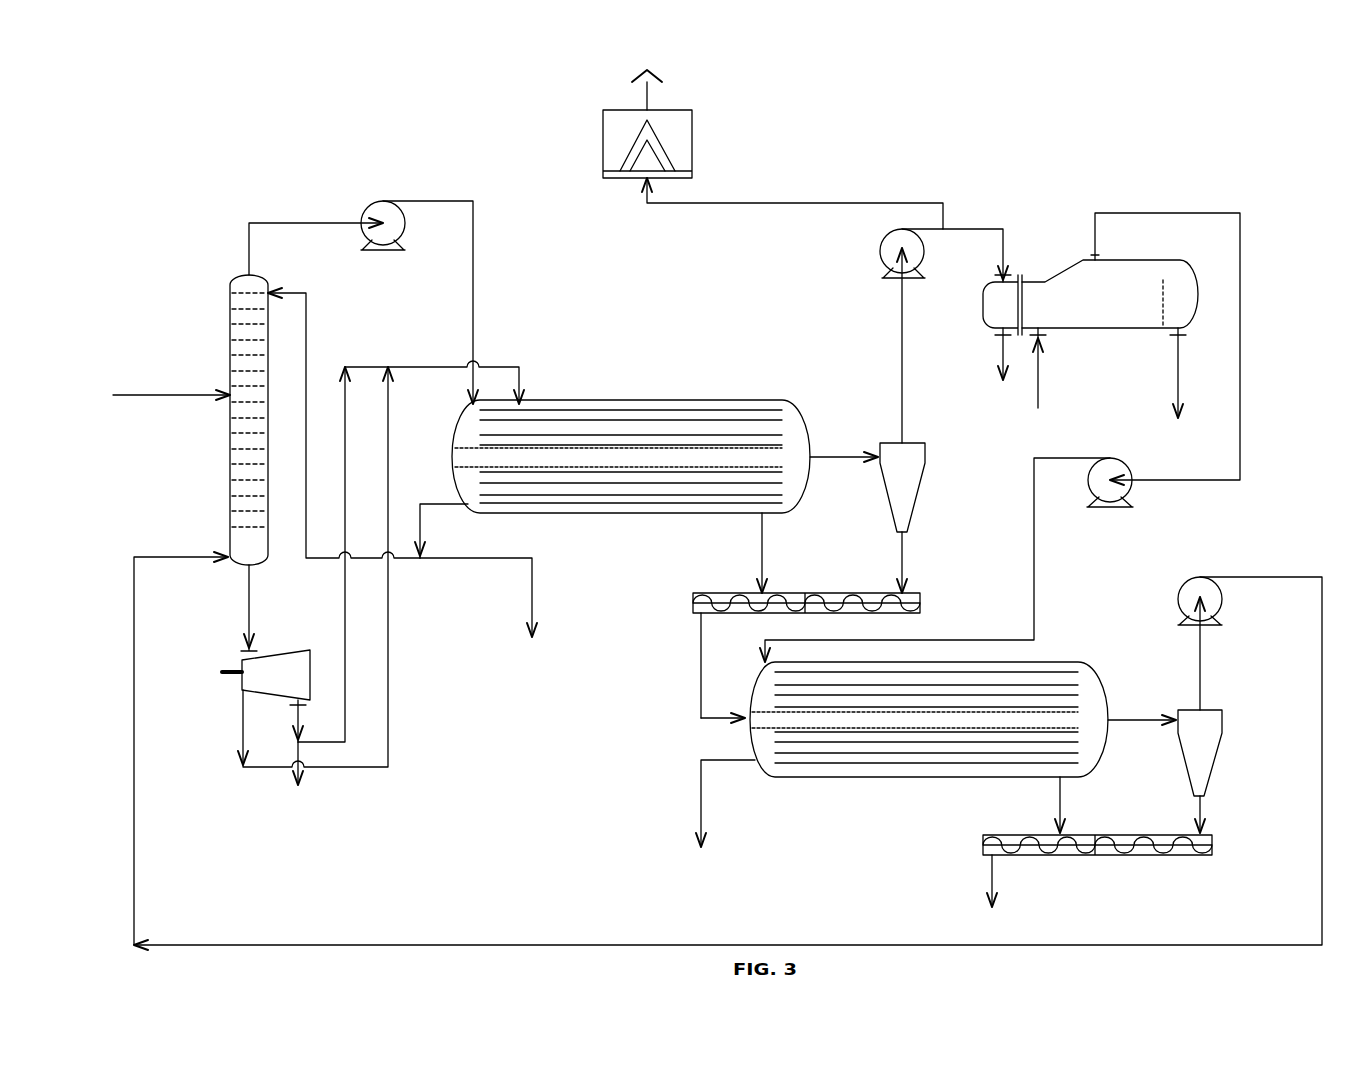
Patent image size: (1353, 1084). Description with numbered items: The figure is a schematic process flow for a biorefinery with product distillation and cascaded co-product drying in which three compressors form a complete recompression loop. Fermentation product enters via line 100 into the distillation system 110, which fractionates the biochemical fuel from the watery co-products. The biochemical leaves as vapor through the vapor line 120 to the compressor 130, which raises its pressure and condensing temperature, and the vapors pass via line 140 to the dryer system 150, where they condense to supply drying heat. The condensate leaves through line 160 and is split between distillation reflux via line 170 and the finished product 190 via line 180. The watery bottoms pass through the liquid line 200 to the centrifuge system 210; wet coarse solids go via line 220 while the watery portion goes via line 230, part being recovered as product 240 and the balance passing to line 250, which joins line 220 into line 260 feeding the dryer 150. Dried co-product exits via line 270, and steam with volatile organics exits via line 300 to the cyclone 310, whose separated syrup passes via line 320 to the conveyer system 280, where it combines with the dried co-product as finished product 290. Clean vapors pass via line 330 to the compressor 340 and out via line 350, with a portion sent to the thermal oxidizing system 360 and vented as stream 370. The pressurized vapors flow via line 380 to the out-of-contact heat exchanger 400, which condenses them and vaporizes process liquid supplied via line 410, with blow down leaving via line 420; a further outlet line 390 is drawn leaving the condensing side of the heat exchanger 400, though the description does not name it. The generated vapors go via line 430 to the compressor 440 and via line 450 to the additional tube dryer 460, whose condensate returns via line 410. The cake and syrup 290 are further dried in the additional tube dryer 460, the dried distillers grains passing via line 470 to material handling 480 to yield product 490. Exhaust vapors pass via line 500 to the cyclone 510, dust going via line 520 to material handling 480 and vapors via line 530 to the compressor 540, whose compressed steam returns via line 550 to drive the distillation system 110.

The line 100 is at (171, 385).
The distillation system 110 is at (228, 275).
The vapor line 120 is at (316, 239).
The compressor 130 is at (383, 238).
The line 140 is at (430, 290).
The dryer system 150 is at (643, 395).
The line 160 is at (441, 531).
The line 170 is at (344, 436).
The line 180 is at (478, 597).
The finished product 190 is at (541, 658).
The liquid line 200 is at (264, 608).
The centrifuge system 210 is at (236, 664).
The line 220 is at (300, 567).
The line 230 is at (284, 721).
The product 240 is at (311, 779).
The line 250 is at (324, 554).
The line 260 is at (434, 373).
The line 270 is at (745, 553).
The conveyer system 280 is at (806, 655).
The finished product 290 is at (691, 691).
The line 300 is at (844, 448).
The cyclone 310 is at (933, 457).
The line 320 is at (883, 562).
The line 330 is at (884, 345).
The compressor 340 is at (876, 250).
The line 350 is at (792, 203).
The thermal oxidizing system 360 is at (697, 128).
The stream 370 is at (651, 81).
The line 380 is at (977, 255).
The vessel outlet stream 390 is at (993, 354).
The out-of-contact heat exchanger 400 is at (1075, 259).
The line 410 is at (900, 587).
The line 420 is at (1165, 373).
The line 430 is at (1167, 338).
The compressor 440 is at (1135, 490).
The line 450 is at (935, 548).
The additional tube dryer 460 is at (897, 790).
The line 470 is at (1042, 805).
The material handling 480 is at (1097, 860).
The product 490 is at (998, 893).
The line 500 is at (1142, 712).
The cyclone 510 is at (1232, 722).
The line 520 is at (1181, 814).
The line 530 is at (1181, 653).
The compressor 540 is at (1172, 595).
The line 550 is at (728, 741).